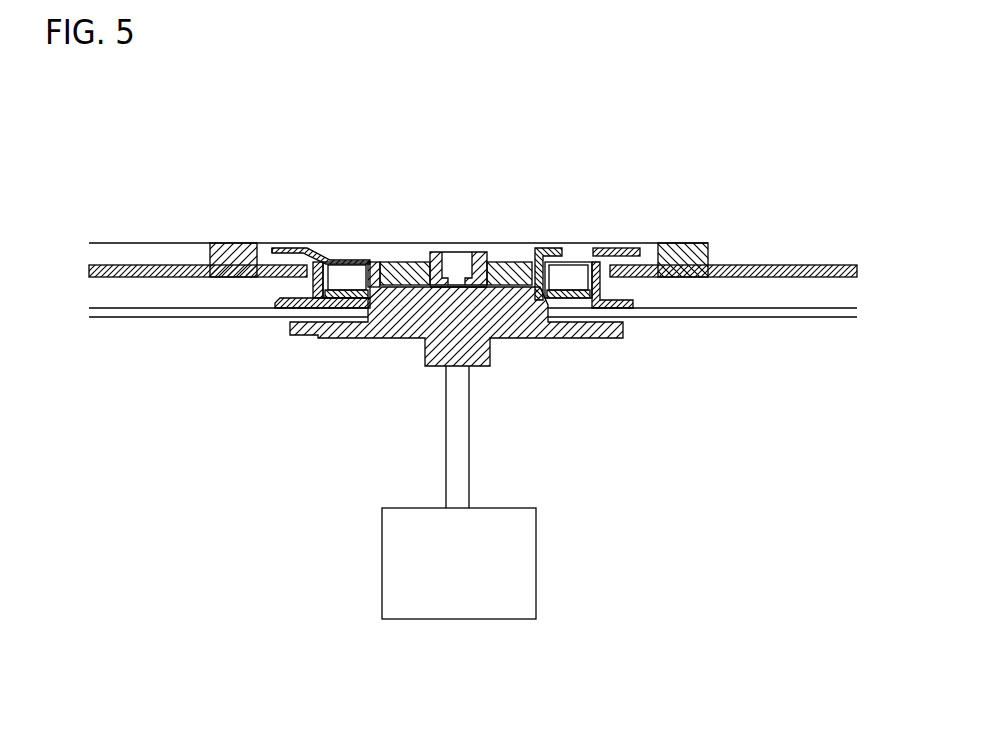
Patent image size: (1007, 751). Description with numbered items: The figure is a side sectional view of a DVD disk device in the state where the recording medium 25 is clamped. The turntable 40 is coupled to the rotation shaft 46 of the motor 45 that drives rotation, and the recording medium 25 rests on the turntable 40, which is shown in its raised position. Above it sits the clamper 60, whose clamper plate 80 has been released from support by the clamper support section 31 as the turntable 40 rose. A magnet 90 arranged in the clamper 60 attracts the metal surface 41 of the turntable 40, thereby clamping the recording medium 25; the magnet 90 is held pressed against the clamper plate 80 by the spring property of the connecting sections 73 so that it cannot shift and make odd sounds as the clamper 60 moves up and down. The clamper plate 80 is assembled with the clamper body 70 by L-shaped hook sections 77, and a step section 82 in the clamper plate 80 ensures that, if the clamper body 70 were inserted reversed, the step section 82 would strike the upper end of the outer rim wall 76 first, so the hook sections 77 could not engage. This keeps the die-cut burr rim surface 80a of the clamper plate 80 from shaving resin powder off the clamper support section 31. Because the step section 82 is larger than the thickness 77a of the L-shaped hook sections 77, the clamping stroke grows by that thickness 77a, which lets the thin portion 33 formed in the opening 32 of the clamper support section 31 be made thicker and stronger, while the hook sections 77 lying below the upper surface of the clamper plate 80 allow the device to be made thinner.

The recording medium 25 is at (772, 318).
The clamper support section 31 is at (762, 267).
The opening 32 is at (600, 279).
The thin portion 33 is at (645, 254).
The turntable 40 is at (509, 338).
The metal surface 41 is at (483, 290).
The motor 45 is at (536, 562).
The rotation shaft 46 is at (469, 432).
The clamper 60 is at (456, 199).
The clamper body 70 is at (277, 302).
The connecting sections 73 is at (410, 262).
The outer rim wall 76 is at (345, 262).
The L-shaped hook sections 77 is at (548, 262).
The thickness 77a is at (566, 250).
The clamper plate 80 is at (304, 245).
The burr rim surface 80a is at (298, 243).
The step section 82 is at (316, 262).
The magnet 90 is at (518, 261).